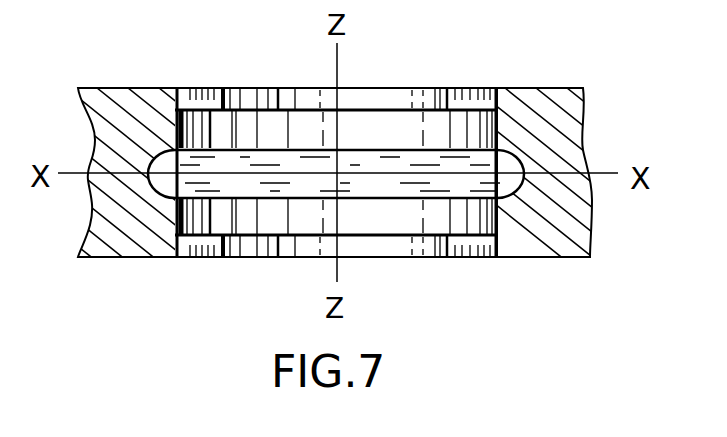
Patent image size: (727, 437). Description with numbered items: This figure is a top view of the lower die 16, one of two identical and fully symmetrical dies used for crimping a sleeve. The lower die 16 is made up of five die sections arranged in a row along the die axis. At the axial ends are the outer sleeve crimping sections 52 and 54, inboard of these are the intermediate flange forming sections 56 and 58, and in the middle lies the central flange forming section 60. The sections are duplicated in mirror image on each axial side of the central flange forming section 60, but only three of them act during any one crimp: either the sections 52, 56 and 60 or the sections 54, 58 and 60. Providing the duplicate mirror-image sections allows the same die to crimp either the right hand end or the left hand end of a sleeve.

The lower die 16 is at (580, 121).
The axially outer sleeve crimping section 52 is at (455, 97).
The axially outer sleeve crimping section 54 is at (243, 242).
The intermediate flange forming section 56 is at (497, 118).
The intermediate flange forming section 58 is at (498, 219).
The central flange forming section 60 is at (415, 199).